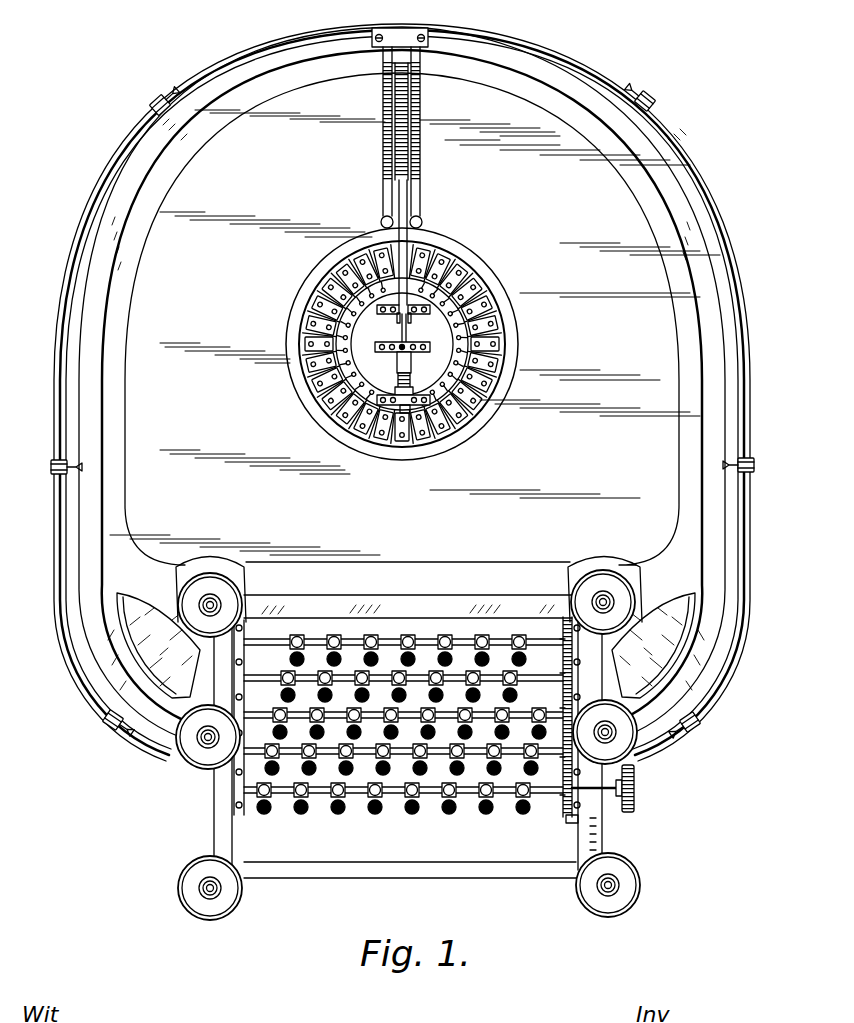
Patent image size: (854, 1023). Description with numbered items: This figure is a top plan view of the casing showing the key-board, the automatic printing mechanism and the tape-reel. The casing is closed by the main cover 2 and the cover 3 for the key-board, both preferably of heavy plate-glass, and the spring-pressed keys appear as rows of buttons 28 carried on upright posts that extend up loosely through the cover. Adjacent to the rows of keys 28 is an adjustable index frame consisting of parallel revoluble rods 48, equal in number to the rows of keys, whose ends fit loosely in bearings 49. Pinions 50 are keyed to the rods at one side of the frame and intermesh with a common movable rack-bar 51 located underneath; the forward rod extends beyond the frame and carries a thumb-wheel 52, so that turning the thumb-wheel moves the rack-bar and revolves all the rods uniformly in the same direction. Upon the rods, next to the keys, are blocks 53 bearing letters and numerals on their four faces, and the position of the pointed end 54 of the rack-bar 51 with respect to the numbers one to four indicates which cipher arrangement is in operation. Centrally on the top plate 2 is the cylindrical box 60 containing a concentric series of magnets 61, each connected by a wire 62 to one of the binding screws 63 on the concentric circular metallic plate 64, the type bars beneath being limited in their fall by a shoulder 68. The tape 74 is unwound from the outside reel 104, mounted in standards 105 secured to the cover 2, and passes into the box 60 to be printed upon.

The main cover 2 is at (402, 319).
The cover for the key-board 3 is at (410, 860).
The button 28 is at (518, 812).
The revoluble rods 48 is at (396, 795).
The bearings 49 is at (587, 797).
The pinions 50 is at (565, 795).
The rack-bar 51 is at (573, 779).
The thumb-wheel 52 is at (637, 782).
The blocks 53 is at (484, 796).
The pointed end of the rack-bar 54 is at (583, 818).
The cylindrical box 60 is at (497, 391).
The magnets 61 is at (330, 410).
The wire 62 is at (463, 383).
The binding screws 63 is at (349, 336).
The concentric circular metallic plate 64 is at (357, 367).
The shoulder 68 is at (399, 412).
The tape 74 is at (410, 331).
The outside reel 104 is at (414, 112).
The standards 105 is at (421, 212).